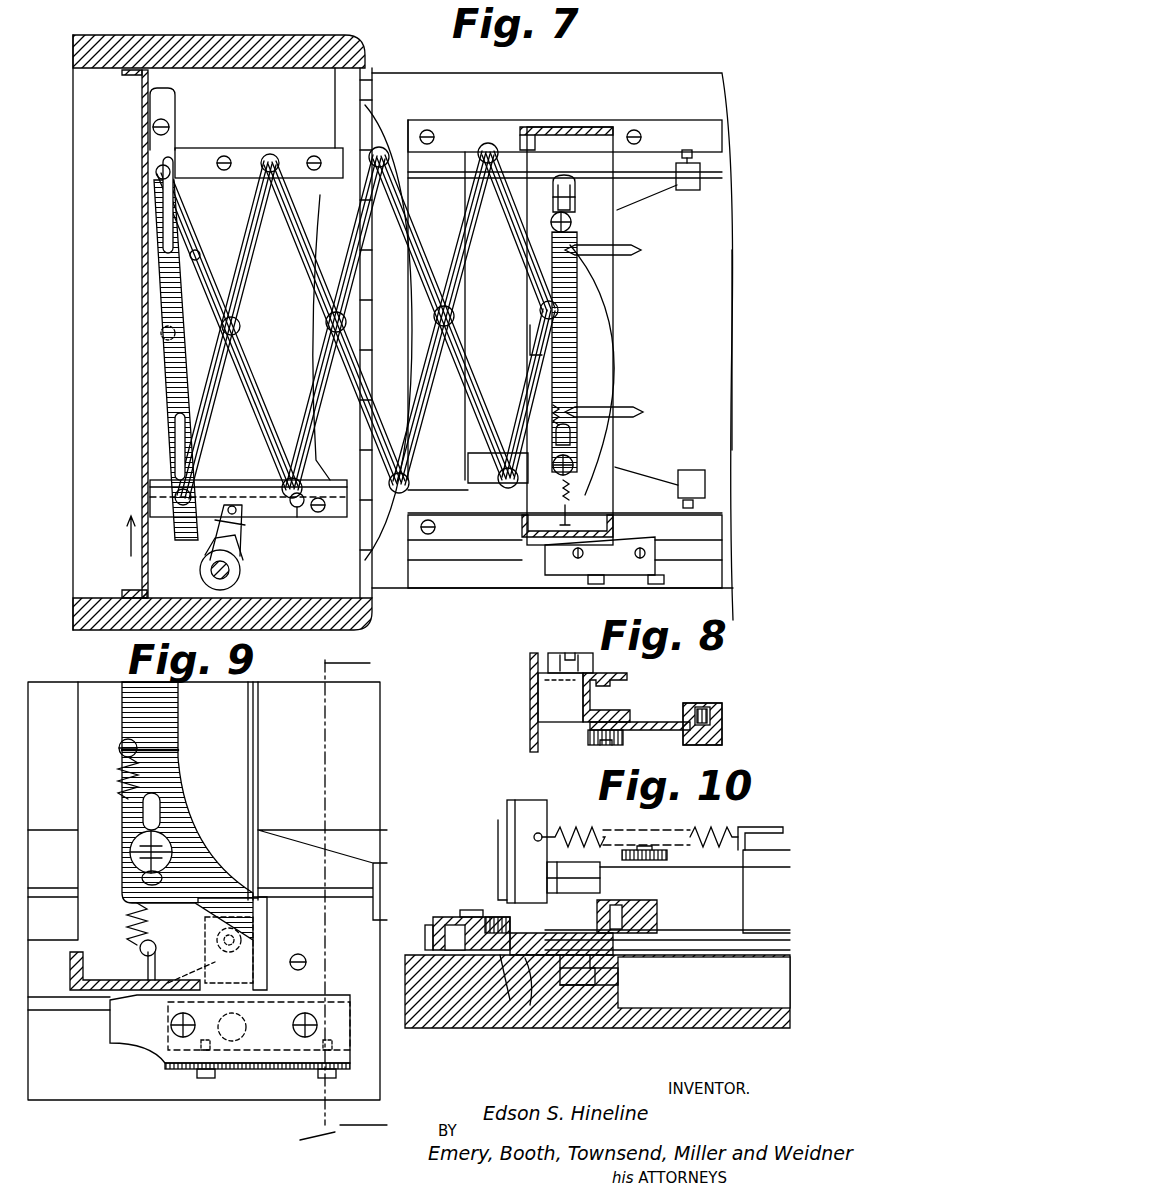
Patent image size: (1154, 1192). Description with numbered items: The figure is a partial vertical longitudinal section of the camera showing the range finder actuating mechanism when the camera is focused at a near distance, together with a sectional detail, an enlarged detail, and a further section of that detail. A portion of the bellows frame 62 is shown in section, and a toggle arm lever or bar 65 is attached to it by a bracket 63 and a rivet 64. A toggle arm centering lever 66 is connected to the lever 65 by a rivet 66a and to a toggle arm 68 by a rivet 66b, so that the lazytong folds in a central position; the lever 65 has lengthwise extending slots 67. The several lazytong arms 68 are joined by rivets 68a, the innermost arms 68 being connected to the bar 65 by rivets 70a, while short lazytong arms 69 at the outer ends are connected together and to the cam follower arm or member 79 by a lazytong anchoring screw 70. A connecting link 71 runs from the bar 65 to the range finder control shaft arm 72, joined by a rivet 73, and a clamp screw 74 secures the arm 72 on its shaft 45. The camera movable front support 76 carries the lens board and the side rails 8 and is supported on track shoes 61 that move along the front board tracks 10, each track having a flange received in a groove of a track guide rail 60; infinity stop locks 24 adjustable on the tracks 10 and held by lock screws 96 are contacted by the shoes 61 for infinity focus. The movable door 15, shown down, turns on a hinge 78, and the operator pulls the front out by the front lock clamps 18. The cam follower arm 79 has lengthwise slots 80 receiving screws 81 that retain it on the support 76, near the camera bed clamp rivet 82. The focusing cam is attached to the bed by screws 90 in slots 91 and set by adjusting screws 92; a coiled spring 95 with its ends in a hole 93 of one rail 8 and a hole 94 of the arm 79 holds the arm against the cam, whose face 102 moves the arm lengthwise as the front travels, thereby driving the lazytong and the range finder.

In FIG. 7, the side rail 8 is at (175, 513).
In FIG. 9, the side rail 8 is at (85, 975).
In FIG. 10, the side rail 8 is at (540, 826).
In FIG. 9, the front board track 10 is at (343, 897).
In FIG. 10, the front board track 10 is at (600, 968).
In FIG. 7, the movable door 15 is at (726, 352).
In FIG. 7, the front lock clamp 18 is at (638, 254).
In FIG. 7, the infinity stop lock 24 is at (688, 190).
In FIG. 7, the range finder control shaft 45 is at (205, 570).
In FIG. 7, the track guide rail 60 is at (512, 535).
In FIG. 10, the track guide rail 60 is at (484, 1022).
In FIG. 7, the track shoe 61 is at (565, 302).
In FIG. 7, the bellows frame 62 is at (142, 110).
In FIG. 8, the bellows frame 62 is at (530, 698).
In FIG. 7, the bracket 63 is at (172, 100).
In FIG. 7, the rivet 64 is at (170, 127).
In FIG. 7, the toggle arm lever 65 is at (175, 385).
In FIG. 7, the toggle arm centering lever 66 is at (193, 292).
In FIG. 7, the rivet 66a is at (170, 335).
In FIG. 7, the rivet 66b is at (190, 262).
In FIG. 7, the lengthwise extending slot 67 is at (165, 238).
In FIG. 7, the lazytong arm 68 is at (238, 220).
In FIG. 7, the rivet 68a is at (300, 535).
In FIG. 7, the short lazytong arm 69 is at (518, 243).
In FIG. 7, the lazytong anchoring screw 70 is at (545, 312).
In FIG. 10, the lazytong anchoring screw 70 is at (762, 826).
In FIG. 7, the rivet 70a is at (176, 496).
In FIG. 8, the rivet 70a is at (597, 745).
In FIG. 7, the connecting link 71 is at (208, 503).
In FIG. 8, the connecting link 71 is at (645, 722).
In FIG. 7, the range finder control shaft arm 72 is at (235, 540).
In FIG. 8, the range finder control shaft arm 72 is at (722, 718).
In FIG. 7, the rivet 73 is at (233, 506).
In FIG. 8, the rivet 73 is at (700, 705).
In FIG. 7, the clamp screw 74 is at (237, 560).
In FIG. 7, the camera movable front support 76 is at (605, 228).
In FIG. 9, the camera movable front support 76 is at (248, 728).
In FIG. 10, the camera movable front support 76 is at (752, 882).
In FIG. 7, the hinge 78 is at (365, 86).
In FIG. 7, the cam follower arm 79 is at (560, 375).
In FIG. 9, the cam follower arm 79 is at (165, 708).
In FIG. 7, the lengthwise extending slot 80 is at (563, 190).
In FIG. 9, the lengthwise extending slot 80 is at (152, 812).
In FIG. 7, the screw 81 is at (572, 222).
In FIG. 9, the screw 81 is at (165, 845).
In FIG. 7, the camera bed clamp rivet 82 is at (583, 338).
In FIG. 9, the screw 90 is at (178, 1027).
In FIG. 10, the screw 90 is at (470, 912).
In FIG. 9, the slot 91 is at (175, 1018).
In FIG. 7, the adjusting screw 92 is at (590, 578).
In FIG. 9, the adjusting screw 92 is at (200, 1075).
In FIG. 10, the adjusting screw 92 is at (428, 926).
In FIG. 9, the hole 93 is at (148, 954).
In FIG. 10, the hole 93 is at (560, 836).
In FIG. 9, the hole 94 is at (130, 727).
In FIG. 10, the hole 94 is at (712, 830).
In FIG. 7, the coiled spring 95 is at (438, 528).
In FIG. 9, the coiled spring 95 is at (125, 778).
In FIG. 10, the coiled spring 95 is at (537, 1010).
In FIG. 7, the lock screw 96 is at (680, 165).
In FIG. 9, the cam face 102 is at (168, 975).